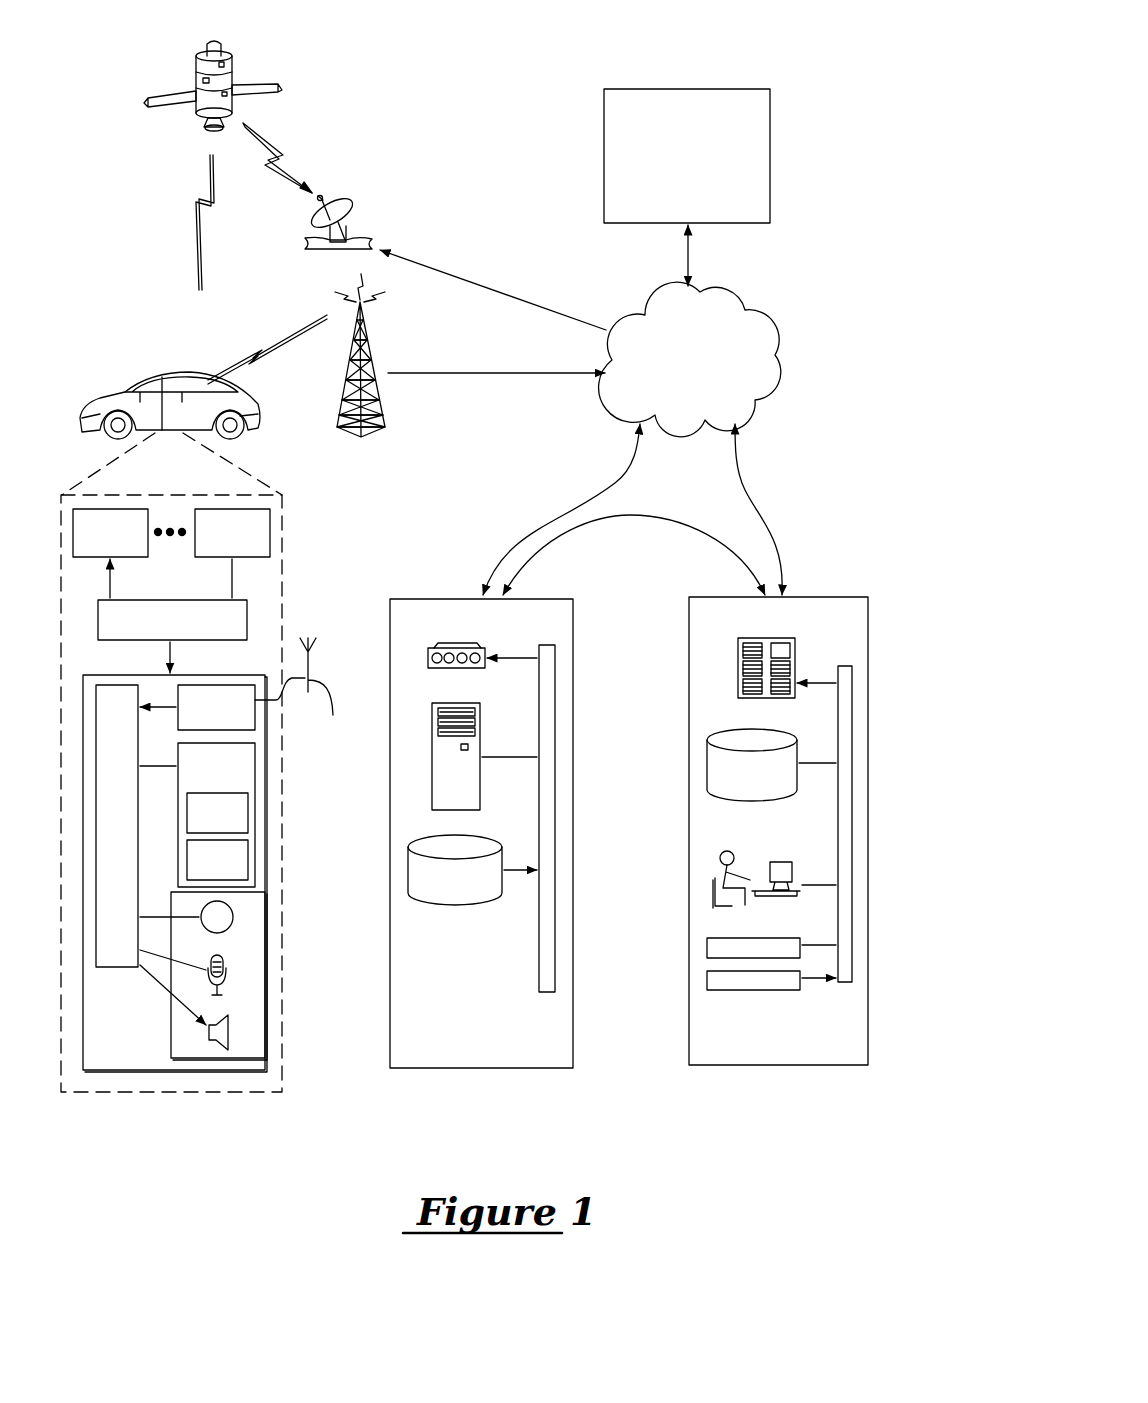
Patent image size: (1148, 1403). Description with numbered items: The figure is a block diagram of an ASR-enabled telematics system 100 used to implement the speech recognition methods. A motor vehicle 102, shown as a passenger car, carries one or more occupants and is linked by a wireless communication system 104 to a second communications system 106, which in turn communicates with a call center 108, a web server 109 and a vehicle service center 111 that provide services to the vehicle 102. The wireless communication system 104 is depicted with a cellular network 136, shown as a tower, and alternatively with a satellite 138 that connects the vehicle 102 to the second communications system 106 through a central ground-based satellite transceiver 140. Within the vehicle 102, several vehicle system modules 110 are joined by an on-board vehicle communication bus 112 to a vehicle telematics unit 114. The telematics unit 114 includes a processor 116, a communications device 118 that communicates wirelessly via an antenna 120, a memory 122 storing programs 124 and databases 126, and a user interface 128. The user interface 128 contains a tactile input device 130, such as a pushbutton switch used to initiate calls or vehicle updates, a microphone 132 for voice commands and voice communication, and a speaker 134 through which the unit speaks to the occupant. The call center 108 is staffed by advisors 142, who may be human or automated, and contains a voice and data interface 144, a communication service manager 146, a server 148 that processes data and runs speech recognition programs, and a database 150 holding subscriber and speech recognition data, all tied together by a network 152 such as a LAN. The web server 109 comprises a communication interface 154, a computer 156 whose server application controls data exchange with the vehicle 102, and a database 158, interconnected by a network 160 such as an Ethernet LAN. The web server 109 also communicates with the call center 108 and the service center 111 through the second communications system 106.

The telematics system 100 is at (572, 56).
The motor vehicle 102 is at (145, 378).
The wireless communication system 104 is at (408, 164).
The second communications system 106 is at (679, 377).
The call center 108 is at (784, 1080).
The web server 109 is at (484, 1082).
The vehicle system modules 110 is at (99, 541).
The vehicle service center 111 is at (674, 208).
The vehicle communication bus 112 is at (161, 631).
The vehicle telematics unit 114 is at (211, 1078).
The processor 116 is at (123, 968).
The communications device 118 is at (205, 721).
The antenna 120 is at (304, 700).
The memory 122 is at (205, 779).
The programs 124 is at (217, 813).
The databases 126 is at (217, 860).
The user interface 128 is at (265, 1068).
The tactile input device 130 is at (246, 917).
The microphone 132 is at (241, 975).
The speaker 134 is at (236, 1033).
The cellular network 136 is at (383, 408).
The satellite 138 is at (232, 66).
The ground-based satellite transceiver 140 is at (368, 240).
The advisor 142 is at (742, 878).
The voice and/or data interface 144 is at (707, 950).
The communication service manager 146 is at (707, 983).
The server 148 is at (765, 638).
The database 150 is at (738, 787).
The network 152 is at (852, 897).
The communication interface 154 is at (455, 648).
The computer 156 is at (442, 800).
The database 158 is at (441, 900).
The network 160 is at (539, 945).